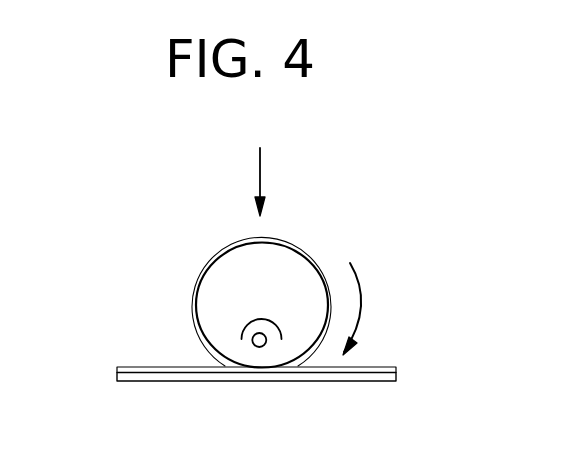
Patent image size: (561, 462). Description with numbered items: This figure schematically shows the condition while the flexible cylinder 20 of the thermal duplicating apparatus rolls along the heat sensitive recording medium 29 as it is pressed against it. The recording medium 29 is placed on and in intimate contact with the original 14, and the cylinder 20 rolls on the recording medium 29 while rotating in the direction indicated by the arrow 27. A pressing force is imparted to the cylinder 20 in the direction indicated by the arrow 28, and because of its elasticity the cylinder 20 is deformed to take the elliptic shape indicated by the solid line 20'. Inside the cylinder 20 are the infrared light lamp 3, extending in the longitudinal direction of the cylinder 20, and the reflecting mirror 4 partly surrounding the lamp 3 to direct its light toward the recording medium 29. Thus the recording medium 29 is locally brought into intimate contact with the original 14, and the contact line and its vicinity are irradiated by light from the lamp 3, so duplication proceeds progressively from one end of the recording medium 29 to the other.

The infrared light lamp 3 is at (265, 334).
The reflecting mirror 4 is at (250, 318).
The original 14 is at (356, 377).
The flexible cylinder 20 is at (270, 275).
The solid line (deformed cylinder) 20' is at (289, 293).
The arrow (rotation direction of cylinder) 27 is at (363, 295).
The arrow (pressing force direction) 28 is at (260, 177).
The heat sensitive recording medium 29 is at (378, 367).